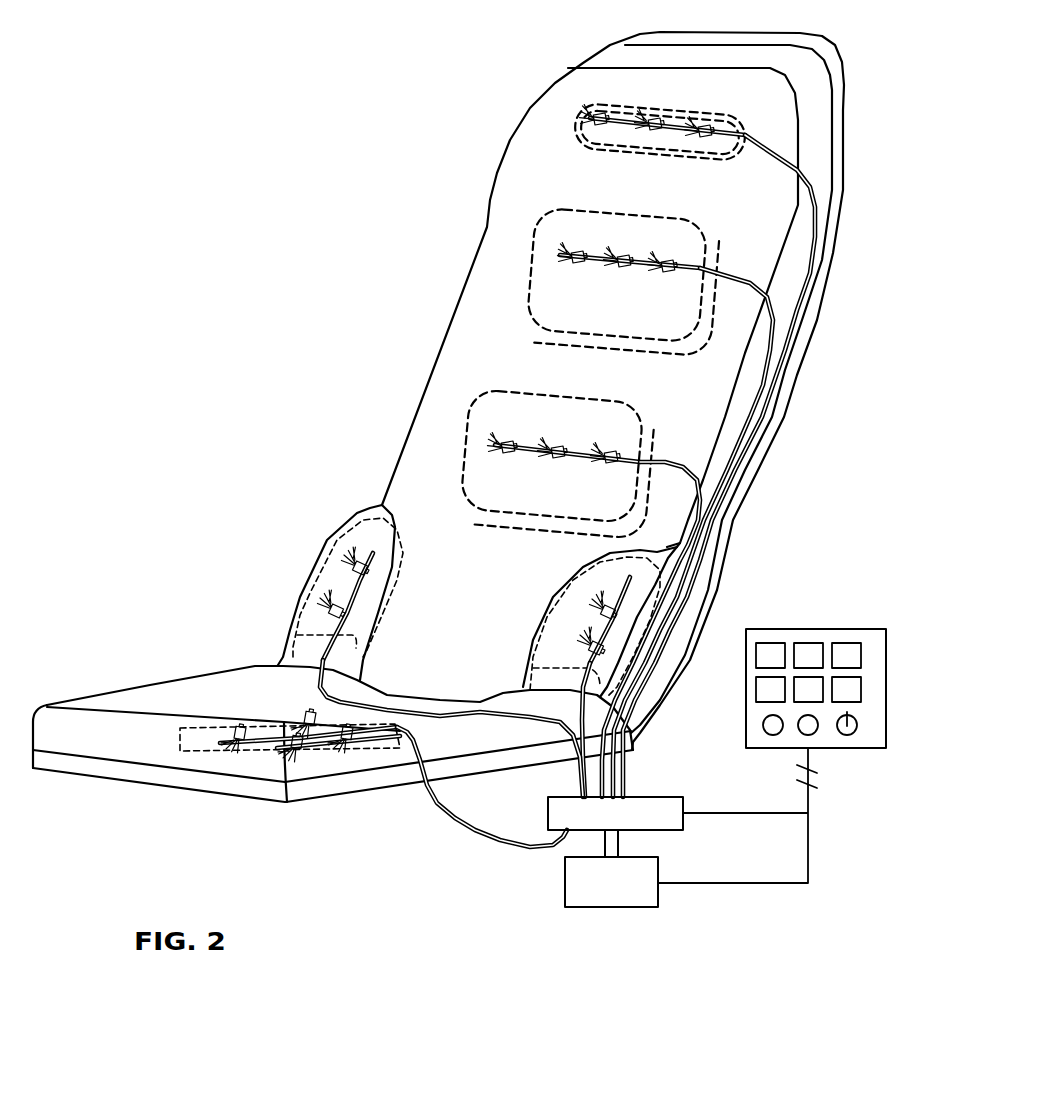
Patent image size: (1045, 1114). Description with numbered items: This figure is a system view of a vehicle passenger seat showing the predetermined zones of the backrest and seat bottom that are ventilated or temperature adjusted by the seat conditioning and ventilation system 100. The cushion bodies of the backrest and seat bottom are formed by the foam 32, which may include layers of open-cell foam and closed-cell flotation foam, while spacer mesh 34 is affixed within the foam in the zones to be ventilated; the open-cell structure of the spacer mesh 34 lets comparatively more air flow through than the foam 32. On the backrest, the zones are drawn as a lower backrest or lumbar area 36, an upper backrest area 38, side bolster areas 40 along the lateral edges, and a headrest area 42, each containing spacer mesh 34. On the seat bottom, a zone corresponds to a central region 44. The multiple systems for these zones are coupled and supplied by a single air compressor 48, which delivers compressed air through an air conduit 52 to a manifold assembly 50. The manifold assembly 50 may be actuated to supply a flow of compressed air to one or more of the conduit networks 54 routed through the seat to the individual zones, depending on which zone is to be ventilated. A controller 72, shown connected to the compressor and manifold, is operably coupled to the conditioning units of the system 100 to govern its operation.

The foam portion of the cushion assemblies 32 is at (470, 363).
The spacer mesh 34 is at (583, 127).
The lower backrest or lumbar area 36 is at (643, 447).
The upper backrest area 38 is at (712, 256).
The side bolster areas 40 is at (653, 600).
The headrest area 42 is at (735, 128).
The central region of the seat bottom 44 is at (267, 760).
The air compressor 48 is at (605, 907).
The manifold assembly 50 is at (657, 795).
The air conduit 52 is at (620, 838).
The conduit networks 54 is at (628, 776).
The controller 72 is at (886, 669).
The seat conditioning and ventilation system 100 is at (748, 931).